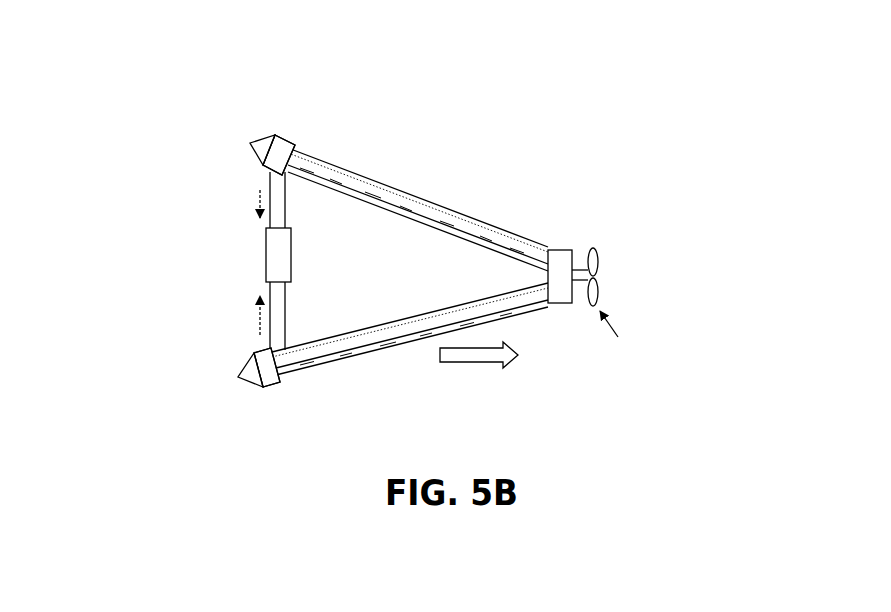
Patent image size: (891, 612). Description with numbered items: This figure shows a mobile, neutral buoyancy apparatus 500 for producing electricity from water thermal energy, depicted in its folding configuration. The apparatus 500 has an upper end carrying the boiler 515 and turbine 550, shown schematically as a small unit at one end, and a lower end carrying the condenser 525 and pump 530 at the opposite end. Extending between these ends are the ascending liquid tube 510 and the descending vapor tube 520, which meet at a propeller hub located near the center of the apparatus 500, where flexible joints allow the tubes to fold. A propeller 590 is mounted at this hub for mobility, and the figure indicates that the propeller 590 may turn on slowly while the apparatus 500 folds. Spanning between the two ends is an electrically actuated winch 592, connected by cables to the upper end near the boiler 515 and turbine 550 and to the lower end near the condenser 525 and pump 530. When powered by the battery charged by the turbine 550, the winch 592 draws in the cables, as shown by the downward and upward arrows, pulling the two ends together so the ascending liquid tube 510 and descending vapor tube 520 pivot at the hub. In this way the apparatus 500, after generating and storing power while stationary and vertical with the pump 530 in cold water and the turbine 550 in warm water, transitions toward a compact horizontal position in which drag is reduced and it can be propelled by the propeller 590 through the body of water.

The mobile, neutral buoyancy apparatus 500 is at (503, 172).
The ascending liquid tube 510 is at (327, 343).
The boiler 515 is at (250, 128).
The descending vapor tube 520 is at (520, 310).
The condenser 525 is at (241, 387).
The pump 530 is at (132, 463).
The turbine 550 is at (132, 81).
The propeller 590 is at (598, 250).
The electrically actuated winch 592 is at (267, 255).